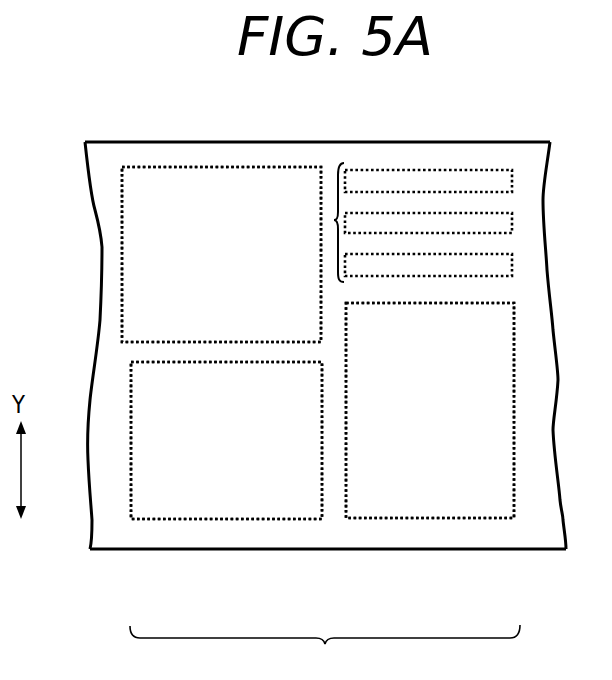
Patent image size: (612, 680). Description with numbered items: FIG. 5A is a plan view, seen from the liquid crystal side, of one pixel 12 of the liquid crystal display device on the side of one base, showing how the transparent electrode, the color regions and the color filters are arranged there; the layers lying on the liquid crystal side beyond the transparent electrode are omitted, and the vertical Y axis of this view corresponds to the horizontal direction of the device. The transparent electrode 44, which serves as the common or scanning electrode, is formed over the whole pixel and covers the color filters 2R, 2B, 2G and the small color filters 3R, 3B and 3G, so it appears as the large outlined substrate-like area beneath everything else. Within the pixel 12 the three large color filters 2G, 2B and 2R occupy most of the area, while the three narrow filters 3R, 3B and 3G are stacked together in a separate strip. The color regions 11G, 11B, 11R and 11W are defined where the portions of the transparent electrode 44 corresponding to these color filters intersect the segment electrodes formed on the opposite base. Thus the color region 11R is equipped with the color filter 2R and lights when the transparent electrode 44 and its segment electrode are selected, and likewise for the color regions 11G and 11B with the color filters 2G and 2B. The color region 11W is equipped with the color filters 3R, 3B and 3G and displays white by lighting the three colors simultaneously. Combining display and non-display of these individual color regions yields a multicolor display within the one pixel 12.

The color filter 2G is at (185, 182).
The color filter 2B is at (245, 505).
The color filter 2R is at (452, 507).
The color region 11G is at (230, 167).
The color region 11B is at (293, 519).
The color region 11R is at (500, 519).
The color region 11W is at (334, 220).
The color filter 3R is at (512, 178).
The color filter 3B is at (512, 215).
The color filter 3G is at (512, 262).
The pixel 12 is at (325, 651).
The transparent electrode 44 is at (548, 538).